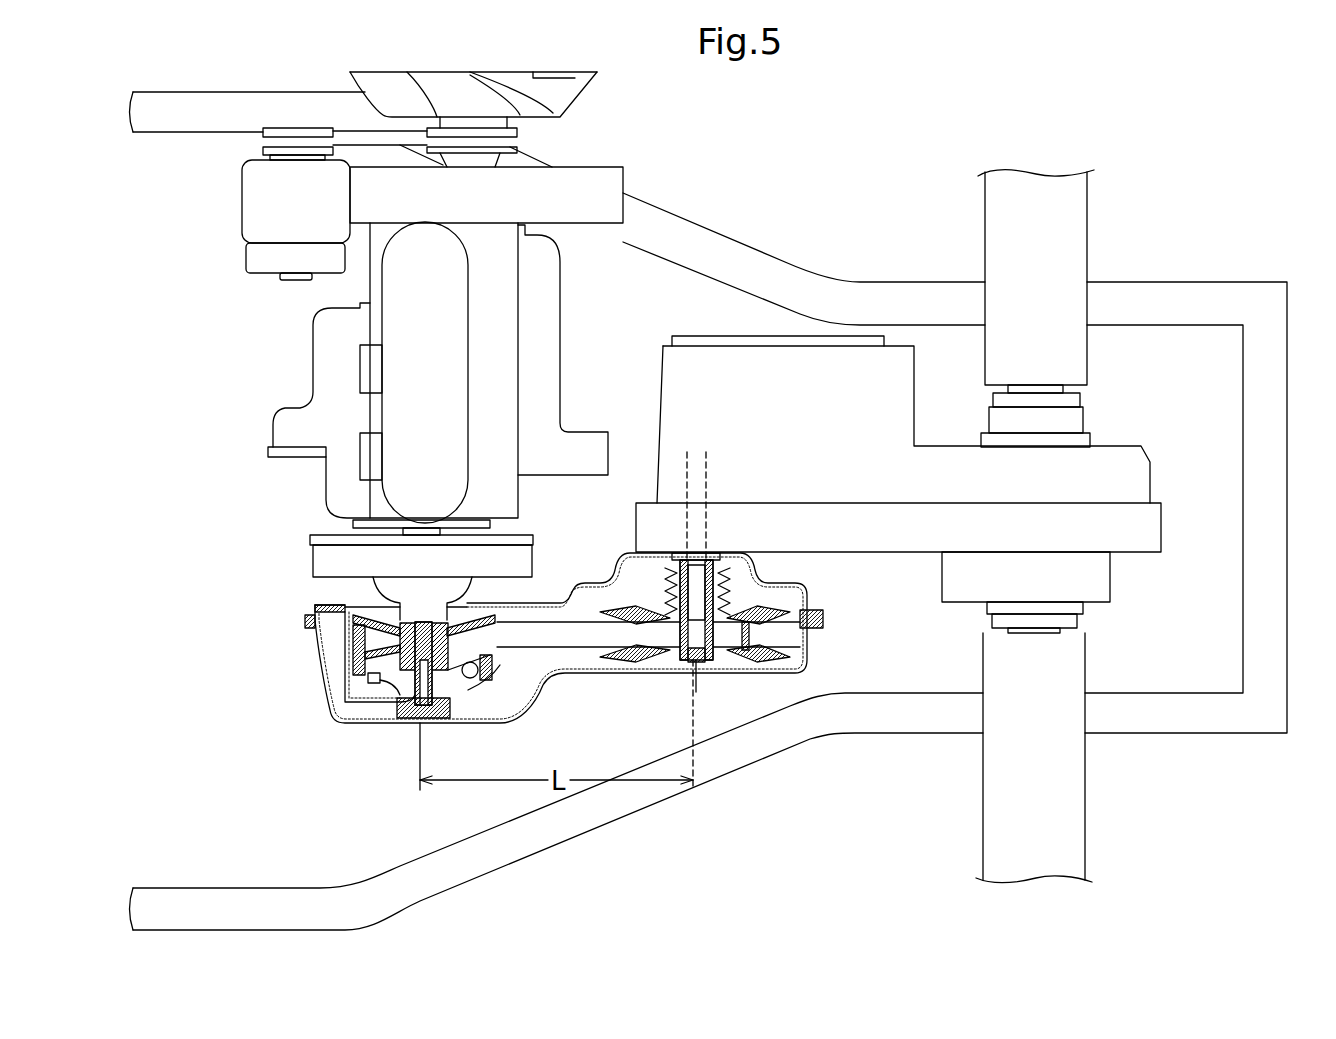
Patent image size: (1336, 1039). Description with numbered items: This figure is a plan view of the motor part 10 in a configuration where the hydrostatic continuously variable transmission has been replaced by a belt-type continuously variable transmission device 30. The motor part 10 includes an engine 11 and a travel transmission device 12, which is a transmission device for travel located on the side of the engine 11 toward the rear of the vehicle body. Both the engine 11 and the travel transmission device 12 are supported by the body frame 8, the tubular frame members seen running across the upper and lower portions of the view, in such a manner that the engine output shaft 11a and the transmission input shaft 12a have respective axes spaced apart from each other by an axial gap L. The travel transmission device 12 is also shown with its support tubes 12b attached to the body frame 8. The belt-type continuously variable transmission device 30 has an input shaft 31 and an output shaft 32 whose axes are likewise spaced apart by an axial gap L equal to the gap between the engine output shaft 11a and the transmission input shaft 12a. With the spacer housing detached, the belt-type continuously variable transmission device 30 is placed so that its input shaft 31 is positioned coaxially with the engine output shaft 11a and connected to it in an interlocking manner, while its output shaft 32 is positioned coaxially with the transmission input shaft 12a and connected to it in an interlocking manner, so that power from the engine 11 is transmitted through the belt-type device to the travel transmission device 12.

The body frame 8 is at (733, 265).
The motor part 10 is at (368, 297).
The engine 11 is at (312, 380).
The engine output shaft 11a is at (423, 604).
The travel transmission device 12 is at (1113, 483).
The transmission input shaft 12a is at (698, 597).
The support tube 12b is at (1053, 240).
The belt-type continuously variable transmission device 30 is at (578, 685).
The input shaft 31 is at (410, 638).
The output shaft 32 is at (667, 590).